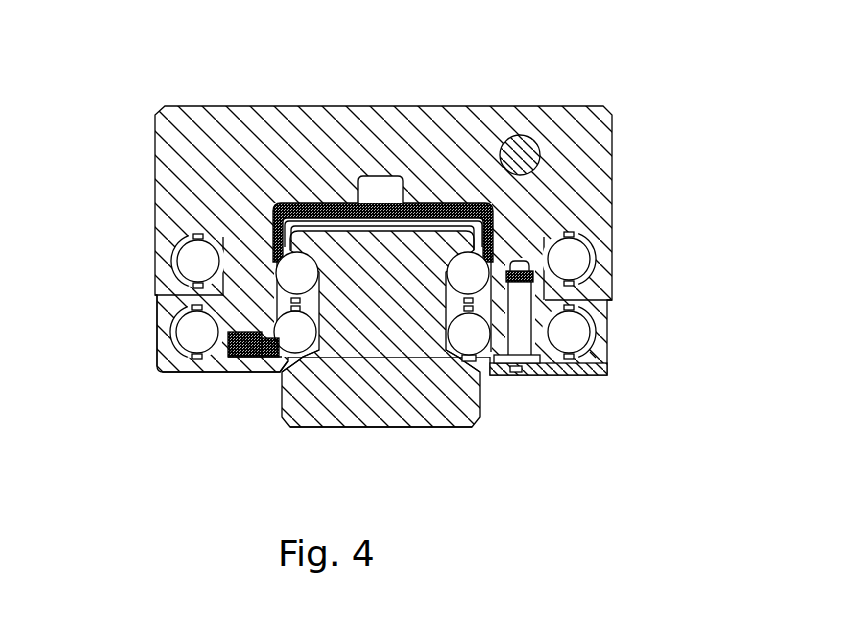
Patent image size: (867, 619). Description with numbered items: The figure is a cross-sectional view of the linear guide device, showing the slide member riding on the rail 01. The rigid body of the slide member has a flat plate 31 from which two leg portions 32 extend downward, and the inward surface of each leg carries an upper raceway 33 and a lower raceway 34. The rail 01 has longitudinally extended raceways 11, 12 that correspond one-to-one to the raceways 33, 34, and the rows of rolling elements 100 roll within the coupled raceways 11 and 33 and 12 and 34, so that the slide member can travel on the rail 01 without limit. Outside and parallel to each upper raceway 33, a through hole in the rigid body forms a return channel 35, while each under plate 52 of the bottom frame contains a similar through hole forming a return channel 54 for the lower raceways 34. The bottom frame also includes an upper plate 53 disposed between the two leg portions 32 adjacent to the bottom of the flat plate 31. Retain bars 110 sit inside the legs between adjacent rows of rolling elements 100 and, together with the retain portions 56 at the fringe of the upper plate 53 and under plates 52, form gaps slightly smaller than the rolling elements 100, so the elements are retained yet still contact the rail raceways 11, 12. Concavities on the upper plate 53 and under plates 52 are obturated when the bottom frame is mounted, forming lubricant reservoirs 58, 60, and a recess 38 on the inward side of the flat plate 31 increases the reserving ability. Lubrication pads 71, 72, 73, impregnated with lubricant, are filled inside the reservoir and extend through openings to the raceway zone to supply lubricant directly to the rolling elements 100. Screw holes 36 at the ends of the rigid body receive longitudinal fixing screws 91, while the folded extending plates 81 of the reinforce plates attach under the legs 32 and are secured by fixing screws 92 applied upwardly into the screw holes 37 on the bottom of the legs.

The flat plate 31 is at (253, 145).
The upper raceway 33 is at (262, 252).
The lower raceway 34 is at (277, 310).
The retain portion 56 is at (290, 242).
The lubricant reservoir 60 is at (327, 200).
The upper plate 53 is at (342, 220).
The recess 38 is at (377, 183).
The lubrication pad 71 is at (383, 203).
The raceway 11 is at (458, 248).
The fixing screw 91 is at (522, 150).
The screw hole 36 is at (545, 150).
The return channel 35 is at (600, 243).
The return channel 54 is at (593, 330).
The screw hole 37 is at (590, 347).
The extending plate 81 is at (578, 374).
The fixing screw 92 is at (520, 342).
The raceway 12 is at (466, 347).
The rolling elements 100 is at (443, 378).
The retain bar 110 is at (382, 398).
The rail 01 is at (345, 373).
The lubricant reservoir 58 is at (252, 354).
The lubrication pad 72 is at (265, 343).
The lubrication pad 73 is at (240, 340).
The under plate 52 is at (207, 368).
The leg portion 32 is at (247, 298).